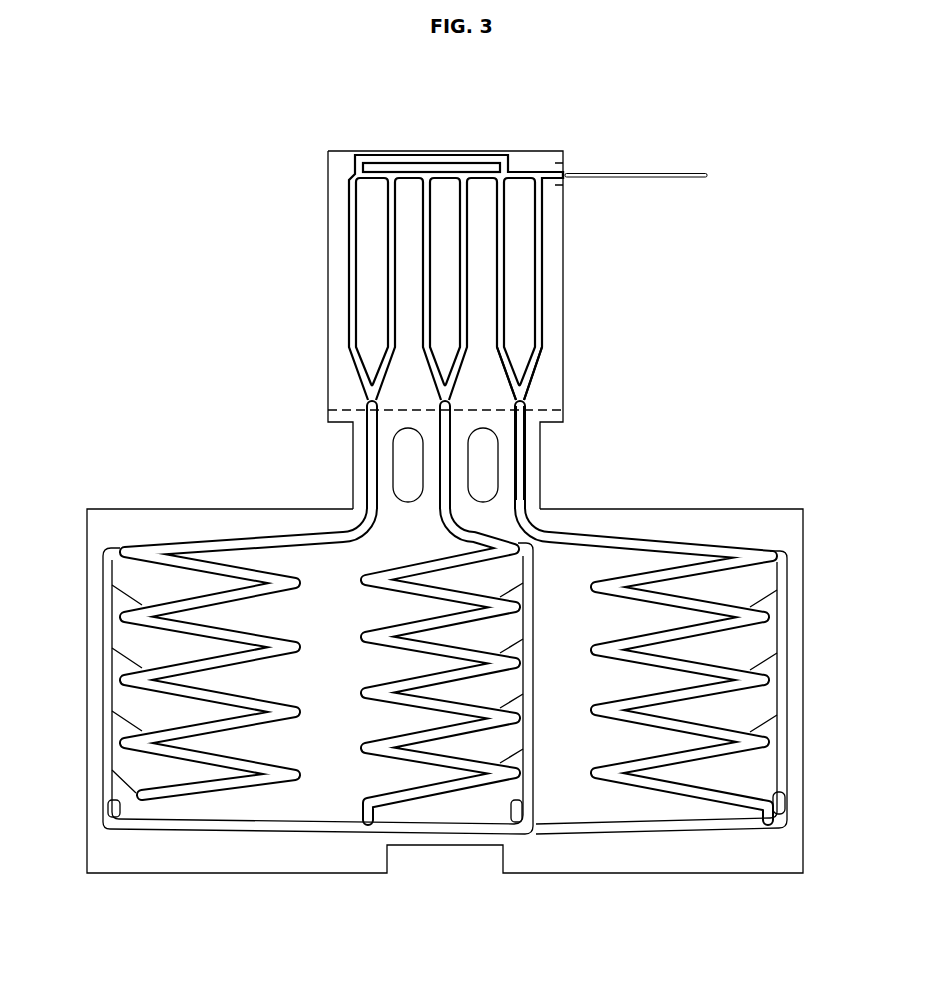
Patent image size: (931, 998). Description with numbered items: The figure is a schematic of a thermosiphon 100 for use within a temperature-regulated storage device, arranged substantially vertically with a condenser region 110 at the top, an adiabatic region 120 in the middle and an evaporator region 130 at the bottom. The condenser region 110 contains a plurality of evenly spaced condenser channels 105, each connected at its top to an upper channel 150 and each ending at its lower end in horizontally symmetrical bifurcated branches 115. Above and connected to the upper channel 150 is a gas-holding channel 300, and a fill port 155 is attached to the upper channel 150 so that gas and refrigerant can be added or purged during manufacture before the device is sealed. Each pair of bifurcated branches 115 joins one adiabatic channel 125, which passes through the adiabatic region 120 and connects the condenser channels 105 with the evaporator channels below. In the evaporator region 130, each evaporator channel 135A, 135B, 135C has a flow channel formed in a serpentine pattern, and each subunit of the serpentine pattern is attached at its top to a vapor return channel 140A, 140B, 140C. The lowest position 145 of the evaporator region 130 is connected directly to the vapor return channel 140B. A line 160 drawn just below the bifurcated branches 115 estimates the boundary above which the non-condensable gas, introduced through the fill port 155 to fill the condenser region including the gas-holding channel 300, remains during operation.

The thermosiphon 100 is at (175, 208).
The gas-holding channel 300 is at (431, 152).
The upper channel 150 is at (536, 162).
The fill port 155 is at (655, 162).
The condenser region 110 is at (313, 140).
The condenser channels 105 is at (548, 295).
The horizontally symmetrical bifurcated branches 115 is at (545, 378).
The line 160 is at (581, 410).
The adiabatic region 120 is at (328, 422).
The adiabatic channel 125 is at (530, 463).
The evaporator channel 135A is at (158, 533).
The evaporator channel 135B is at (420, 555).
The evaporator channel 135C is at (688, 533).
The evaporator region 130 is at (92, 497).
The vapor return channel 140A is at (116, 788).
The vapor return channel 140B is at (516, 808).
The vapor return channel 140C is at (791, 832).
The lowest position 145 is at (532, 842).